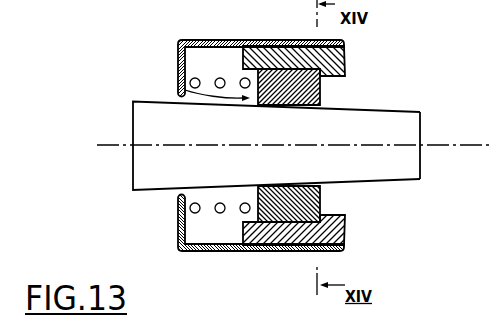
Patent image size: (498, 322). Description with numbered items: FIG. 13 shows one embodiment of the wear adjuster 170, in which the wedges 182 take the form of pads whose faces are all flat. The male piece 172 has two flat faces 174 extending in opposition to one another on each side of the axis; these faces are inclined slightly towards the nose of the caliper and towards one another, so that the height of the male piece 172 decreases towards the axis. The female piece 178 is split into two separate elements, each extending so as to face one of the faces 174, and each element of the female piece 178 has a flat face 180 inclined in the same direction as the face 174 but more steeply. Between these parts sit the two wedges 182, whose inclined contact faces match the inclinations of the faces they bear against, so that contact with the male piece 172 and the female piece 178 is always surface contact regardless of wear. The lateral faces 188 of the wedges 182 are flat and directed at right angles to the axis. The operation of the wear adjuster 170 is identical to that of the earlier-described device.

The wear adjuster 170 is at (336, 68).
The male piece 172 is at (181, 162).
The flat faces 174 is at (398, 110).
The female piece 178 is at (297, 46).
The flat face 180 is at (240, 71).
The wedges 182 is at (322, 90).
The lateral faces 188 is at (178, 88).